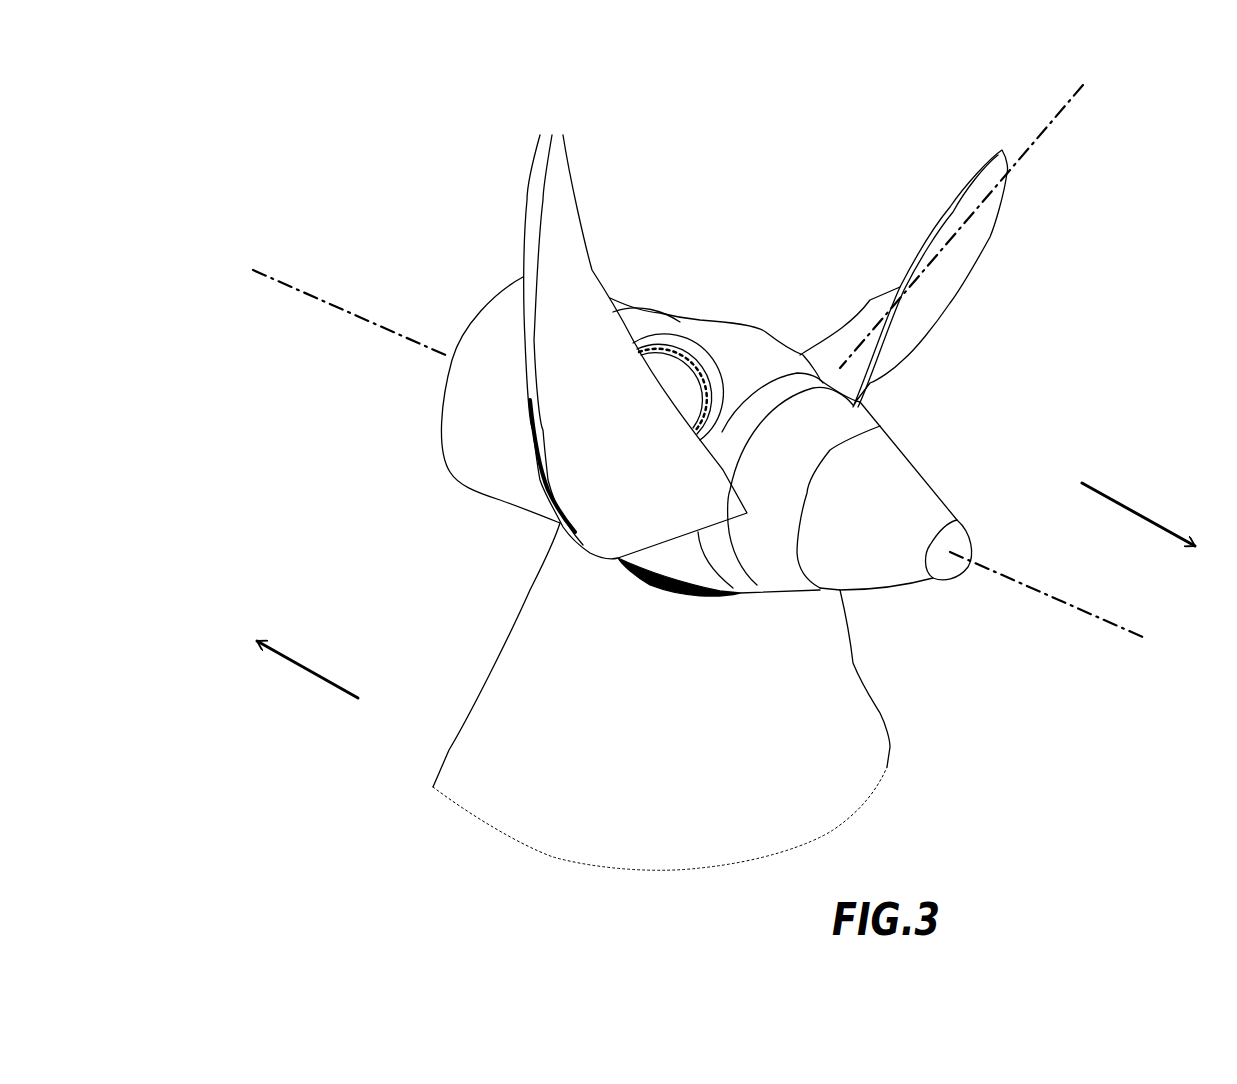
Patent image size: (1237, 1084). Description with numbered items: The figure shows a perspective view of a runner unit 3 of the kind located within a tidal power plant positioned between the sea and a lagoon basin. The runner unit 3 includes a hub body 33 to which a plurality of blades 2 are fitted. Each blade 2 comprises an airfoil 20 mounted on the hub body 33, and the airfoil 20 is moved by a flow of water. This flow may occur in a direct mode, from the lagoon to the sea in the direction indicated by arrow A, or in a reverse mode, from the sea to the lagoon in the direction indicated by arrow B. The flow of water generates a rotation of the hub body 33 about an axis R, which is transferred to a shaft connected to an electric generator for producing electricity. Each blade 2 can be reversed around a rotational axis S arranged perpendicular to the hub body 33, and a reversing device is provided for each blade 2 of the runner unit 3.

The runner unit 3 is at (346, 216).
The blade 2 is at (1020, 242).
The airfoil 20 is at (558, 327).
The hub body 33 is at (742, 353).